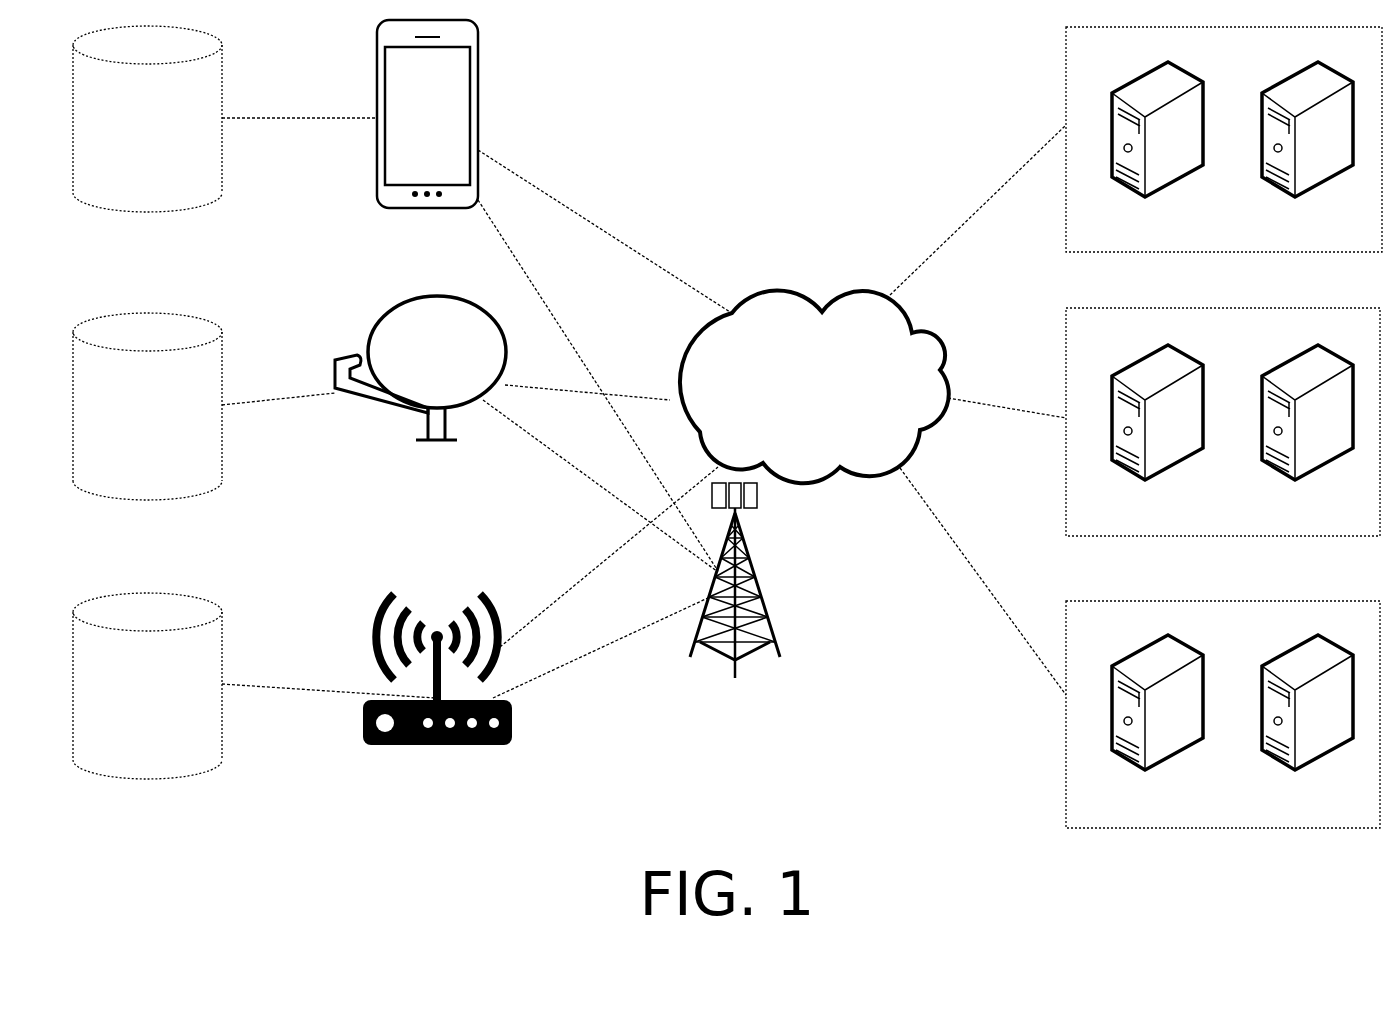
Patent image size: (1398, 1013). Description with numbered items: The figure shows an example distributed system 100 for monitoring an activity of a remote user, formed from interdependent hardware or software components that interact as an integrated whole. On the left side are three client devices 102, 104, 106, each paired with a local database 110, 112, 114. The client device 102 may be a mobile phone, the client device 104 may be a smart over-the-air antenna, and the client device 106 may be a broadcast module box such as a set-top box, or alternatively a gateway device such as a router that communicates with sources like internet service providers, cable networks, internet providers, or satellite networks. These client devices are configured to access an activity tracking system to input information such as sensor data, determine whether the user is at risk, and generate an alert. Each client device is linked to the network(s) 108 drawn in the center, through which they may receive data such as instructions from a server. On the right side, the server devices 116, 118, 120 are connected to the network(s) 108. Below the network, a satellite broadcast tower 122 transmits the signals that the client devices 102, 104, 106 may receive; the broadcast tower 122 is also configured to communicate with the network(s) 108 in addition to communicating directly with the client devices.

The system 100 is at (738, 98).
The client device 102 is at (409, 136).
The client device 104 is at (408, 502).
The client device 106 is at (421, 792).
The network(s) 108 is at (792, 431).
The local database 110 is at (128, 132).
The local database 112 is at (128, 416).
The local database 114 is at (128, 694).
The server device 116 is at (1206, 236).
The server device 118 is at (1206, 518).
The server device 120 is at (1206, 810).
The satellite broadcast tower 122 is at (716, 726).